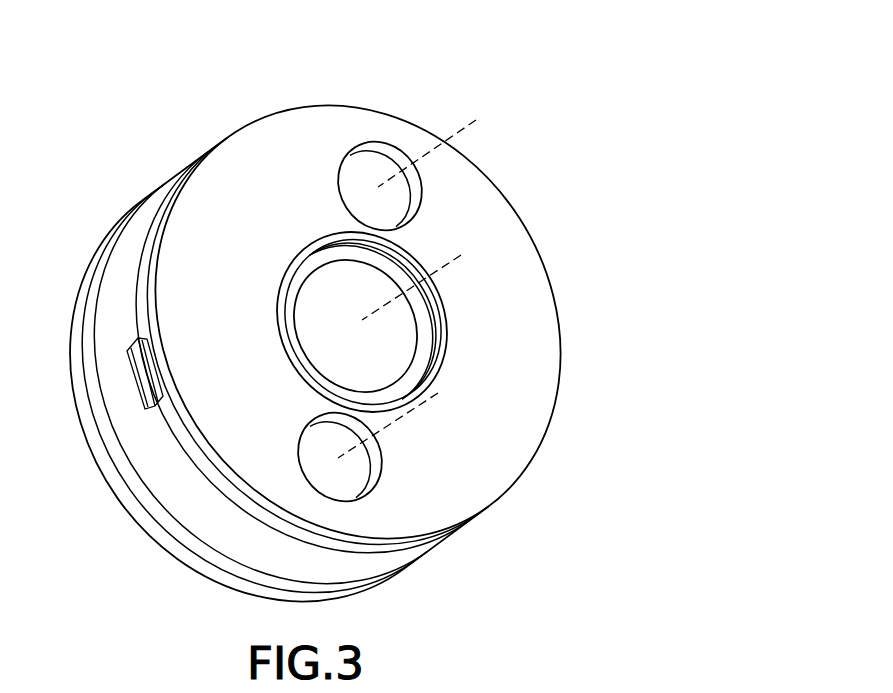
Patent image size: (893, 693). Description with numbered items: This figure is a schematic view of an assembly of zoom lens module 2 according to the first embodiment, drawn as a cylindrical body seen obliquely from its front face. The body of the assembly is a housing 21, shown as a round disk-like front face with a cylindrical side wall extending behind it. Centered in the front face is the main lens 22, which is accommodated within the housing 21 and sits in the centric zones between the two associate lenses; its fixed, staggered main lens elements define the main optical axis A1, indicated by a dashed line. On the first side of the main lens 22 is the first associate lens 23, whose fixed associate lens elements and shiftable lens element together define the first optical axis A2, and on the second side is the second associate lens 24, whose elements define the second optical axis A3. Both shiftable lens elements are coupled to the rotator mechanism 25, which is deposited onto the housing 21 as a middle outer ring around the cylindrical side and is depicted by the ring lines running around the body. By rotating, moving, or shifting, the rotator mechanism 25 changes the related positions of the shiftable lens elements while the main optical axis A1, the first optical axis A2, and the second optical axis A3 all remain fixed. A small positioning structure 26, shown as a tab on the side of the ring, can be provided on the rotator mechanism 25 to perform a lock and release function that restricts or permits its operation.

The assembly of zoom lens module 2 is at (341, 322).
The housing 21 is at (222, 142).
The main lens 22 is at (320, 300).
The first associate lens 23 is at (365, 173).
The second associate lens 24 is at (327, 440).
The rotator mechanism 25 is at (108, 281).
The positioning structure 26 is at (137, 377).
The main optical axis A1 is at (429, 279).
The first optical axis A2 is at (444, 145).
The second optical axis A3 is at (405, 416).